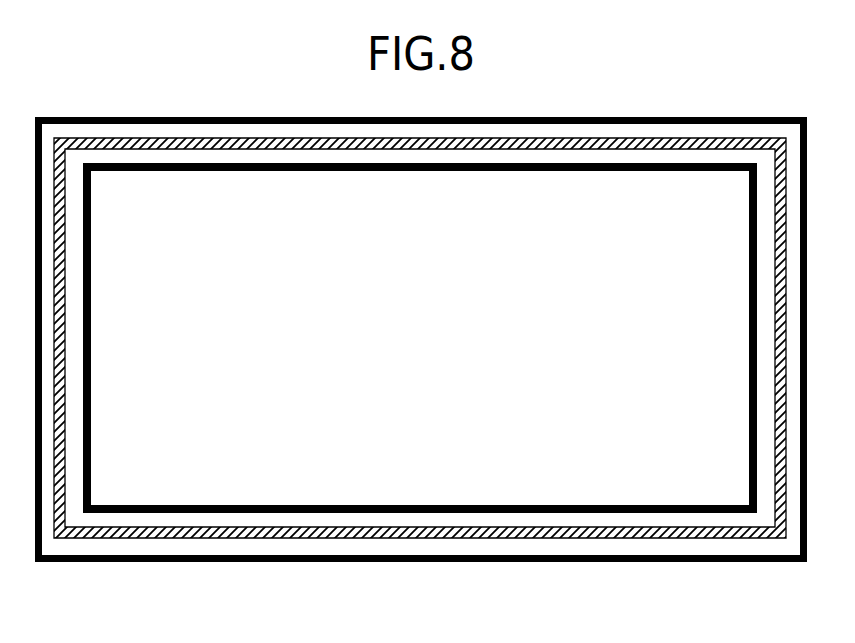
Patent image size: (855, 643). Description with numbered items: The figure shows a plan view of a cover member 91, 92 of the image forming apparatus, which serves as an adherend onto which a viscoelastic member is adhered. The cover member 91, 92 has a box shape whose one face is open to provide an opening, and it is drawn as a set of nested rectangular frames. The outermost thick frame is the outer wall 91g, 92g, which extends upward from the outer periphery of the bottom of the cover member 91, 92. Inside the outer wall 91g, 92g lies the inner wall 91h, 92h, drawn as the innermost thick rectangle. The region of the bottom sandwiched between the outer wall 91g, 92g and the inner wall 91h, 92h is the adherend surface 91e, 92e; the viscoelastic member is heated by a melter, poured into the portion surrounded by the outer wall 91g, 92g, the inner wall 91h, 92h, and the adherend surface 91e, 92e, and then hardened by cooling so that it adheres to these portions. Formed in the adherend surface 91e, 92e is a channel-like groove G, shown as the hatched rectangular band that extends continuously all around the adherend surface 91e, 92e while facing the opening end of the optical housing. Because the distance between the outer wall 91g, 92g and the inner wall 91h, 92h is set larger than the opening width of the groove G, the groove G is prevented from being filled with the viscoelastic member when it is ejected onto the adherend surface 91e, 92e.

The cover member 91 is at (420, 381).
The cover member 92 is at (408, 493).
The adherend surface 91e is at (341, 192).
The adherend surface 92e is at (247, 160).
The inner wall 91h is at (678, 473).
The inner wall 92h is at (665, 507).
The outer wall 91g is at (421, 367).
The outer wall 92g is at (187, 562).
The groove G is at (585, 143).